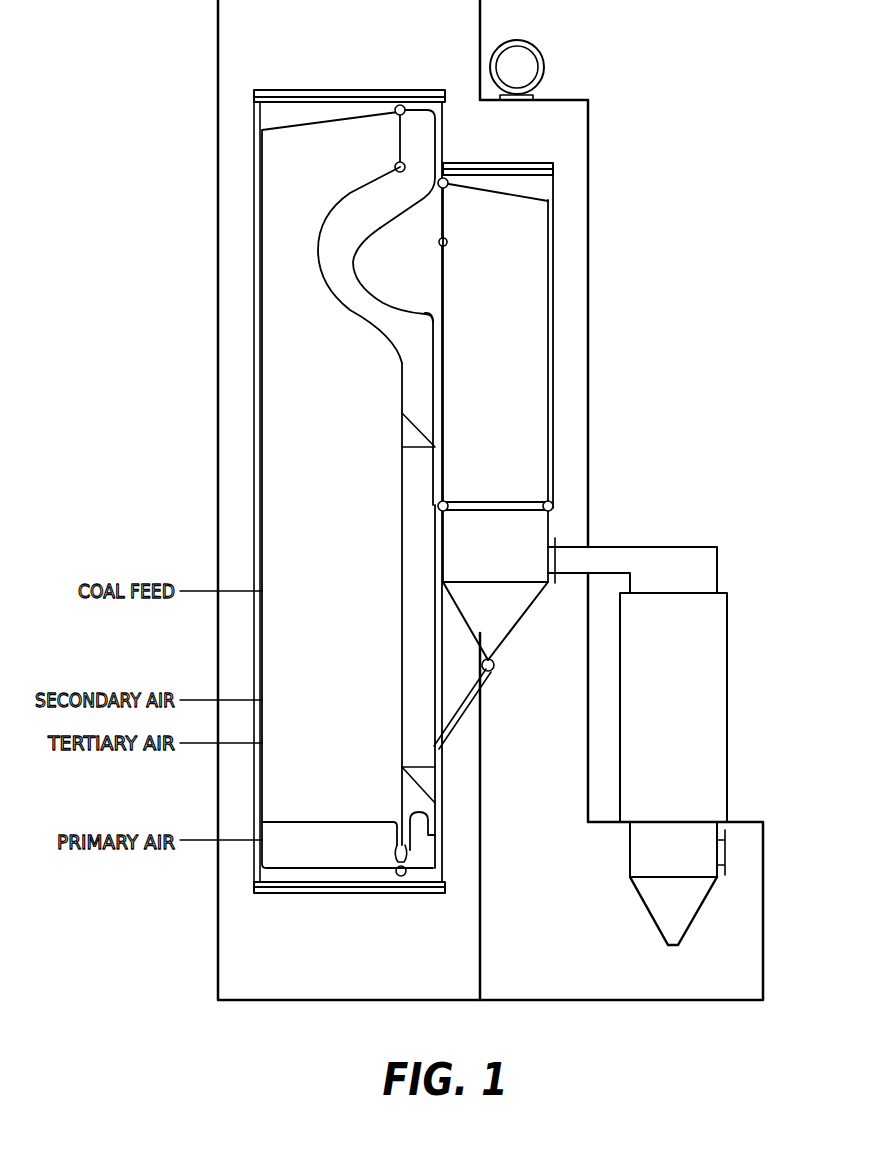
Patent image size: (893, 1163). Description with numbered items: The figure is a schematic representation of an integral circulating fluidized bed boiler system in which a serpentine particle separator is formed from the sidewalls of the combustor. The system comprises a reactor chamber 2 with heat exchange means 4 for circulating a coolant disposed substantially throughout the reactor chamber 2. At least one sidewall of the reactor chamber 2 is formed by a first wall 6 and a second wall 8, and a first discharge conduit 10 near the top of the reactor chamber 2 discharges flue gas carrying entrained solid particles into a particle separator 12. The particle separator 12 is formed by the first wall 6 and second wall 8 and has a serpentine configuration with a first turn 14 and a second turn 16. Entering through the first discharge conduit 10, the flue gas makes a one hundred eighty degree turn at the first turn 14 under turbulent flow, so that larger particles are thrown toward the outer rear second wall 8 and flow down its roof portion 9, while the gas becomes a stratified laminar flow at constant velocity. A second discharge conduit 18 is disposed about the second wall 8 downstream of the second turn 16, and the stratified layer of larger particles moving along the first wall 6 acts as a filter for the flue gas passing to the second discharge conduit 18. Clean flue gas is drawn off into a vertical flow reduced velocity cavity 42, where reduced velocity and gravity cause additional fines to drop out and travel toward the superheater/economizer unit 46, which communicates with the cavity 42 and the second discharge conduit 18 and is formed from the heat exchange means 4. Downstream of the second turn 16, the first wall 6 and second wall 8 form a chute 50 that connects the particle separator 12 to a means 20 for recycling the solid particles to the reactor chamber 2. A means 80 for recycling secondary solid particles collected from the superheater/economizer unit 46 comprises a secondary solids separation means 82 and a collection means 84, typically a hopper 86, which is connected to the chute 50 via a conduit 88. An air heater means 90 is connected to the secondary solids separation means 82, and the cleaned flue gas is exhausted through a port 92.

The reactor chamber 2 is at (316, 621).
The heat exchange means 4 is at (262, 305).
The first wall 6 is at (326, 226).
The second wall 8 is at (435, 145).
The roof portion 9 is at (412, 203).
The first discharge conduit 10 is at (400, 130).
The particle separator 12 is at (417, 128).
The first turn 14 is at (425, 153).
The second turn 16 is at (347, 292).
The second discharge conduit 18 is at (424, 308).
The means for recycling the solid particles 20 is at (402, 735).
The vertical flow reduced velocity cavity 42 is at (406, 258).
The superheater/economizer unit 46 is at (487, 339).
The chute 50 is at (402, 566).
The means for recycling secondary solid particles 80 is at (547, 528).
The secondary solids separation means 82 is at (484, 559).
The collection means 84 is at (484, 626).
The hopper 86 is at (521, 622).
The conduit 88 is at (458, 717).
The air heater means 90 is at (727, 678).
The port 92 is at (725, 857).